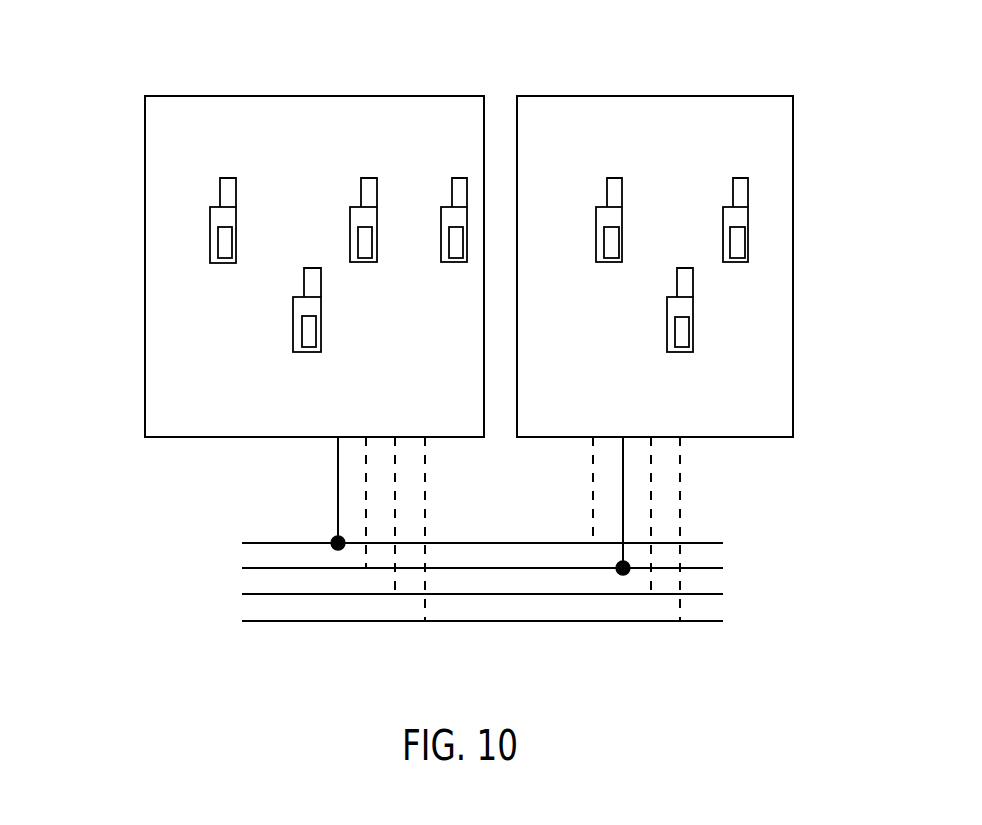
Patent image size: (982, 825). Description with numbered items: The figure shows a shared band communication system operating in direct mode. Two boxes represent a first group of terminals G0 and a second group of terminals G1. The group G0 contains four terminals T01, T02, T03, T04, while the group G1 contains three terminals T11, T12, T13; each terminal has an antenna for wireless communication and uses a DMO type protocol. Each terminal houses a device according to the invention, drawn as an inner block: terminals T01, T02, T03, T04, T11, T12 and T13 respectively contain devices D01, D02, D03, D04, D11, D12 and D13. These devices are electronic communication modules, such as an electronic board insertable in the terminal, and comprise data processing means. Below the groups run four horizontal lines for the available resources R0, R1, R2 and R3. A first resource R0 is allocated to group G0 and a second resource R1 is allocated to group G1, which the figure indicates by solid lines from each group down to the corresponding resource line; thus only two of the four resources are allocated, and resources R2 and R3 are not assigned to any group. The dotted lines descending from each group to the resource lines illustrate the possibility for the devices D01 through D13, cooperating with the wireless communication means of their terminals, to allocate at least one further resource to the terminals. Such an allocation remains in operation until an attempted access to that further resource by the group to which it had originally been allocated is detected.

The first group of terminals G0 is at (145, 148).
The second group of terminals G1 is at (793, 145).
The terminal T01 is at (210, 227).
The device D01 is at (223, 247).
The terminal T02 is at (357, 207).
The device D02 is at (365, 253).
The terminal T03 is at (448, 207).
The device D03 is at (458, 253).
The terminal T04 is at (295, 307).
The device D04 is at (307, 340).
The terminal T11 is at (603, 207).
The device D11 is at (612, 252).
The terminal T12 is at (730, 207).
The device D12 is at (740, 242).
The terminal T13 is at (693, 310).
The device D13 is at (683, 336).
The first resource R0 is at (466, 495).
The second resource R1 is at (466, 507).
The resource R2 is at (466, 521).
The resource R3 is at (466, 534).